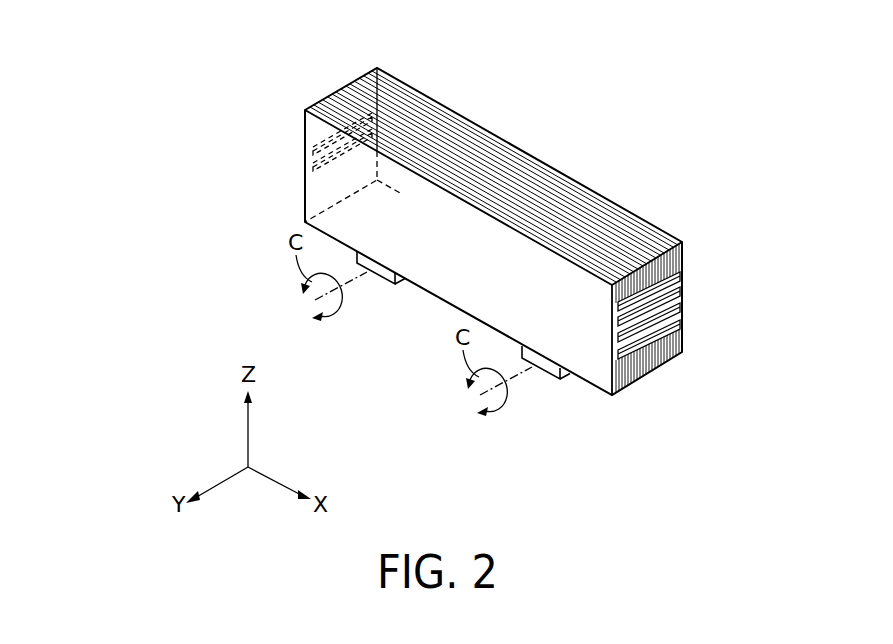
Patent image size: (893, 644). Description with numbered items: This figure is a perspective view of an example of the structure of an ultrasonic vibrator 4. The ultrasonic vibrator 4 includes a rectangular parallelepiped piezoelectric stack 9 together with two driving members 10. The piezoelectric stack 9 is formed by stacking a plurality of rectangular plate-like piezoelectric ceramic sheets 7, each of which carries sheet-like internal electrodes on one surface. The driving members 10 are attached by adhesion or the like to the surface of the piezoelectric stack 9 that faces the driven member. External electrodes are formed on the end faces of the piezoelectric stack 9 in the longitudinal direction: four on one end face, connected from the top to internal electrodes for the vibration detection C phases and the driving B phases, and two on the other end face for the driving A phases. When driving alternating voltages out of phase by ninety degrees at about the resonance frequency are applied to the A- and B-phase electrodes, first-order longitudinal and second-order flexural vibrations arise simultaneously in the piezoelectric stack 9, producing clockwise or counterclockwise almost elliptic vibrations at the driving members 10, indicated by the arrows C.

The ultrasonic vibrator 4 is at (613, 142).
The piezoelectric ceramic sheet 7 is at (637, 217).
The piezoelectric stack 9 is at (402, 79).
The driving member 10 is at (380, 276).